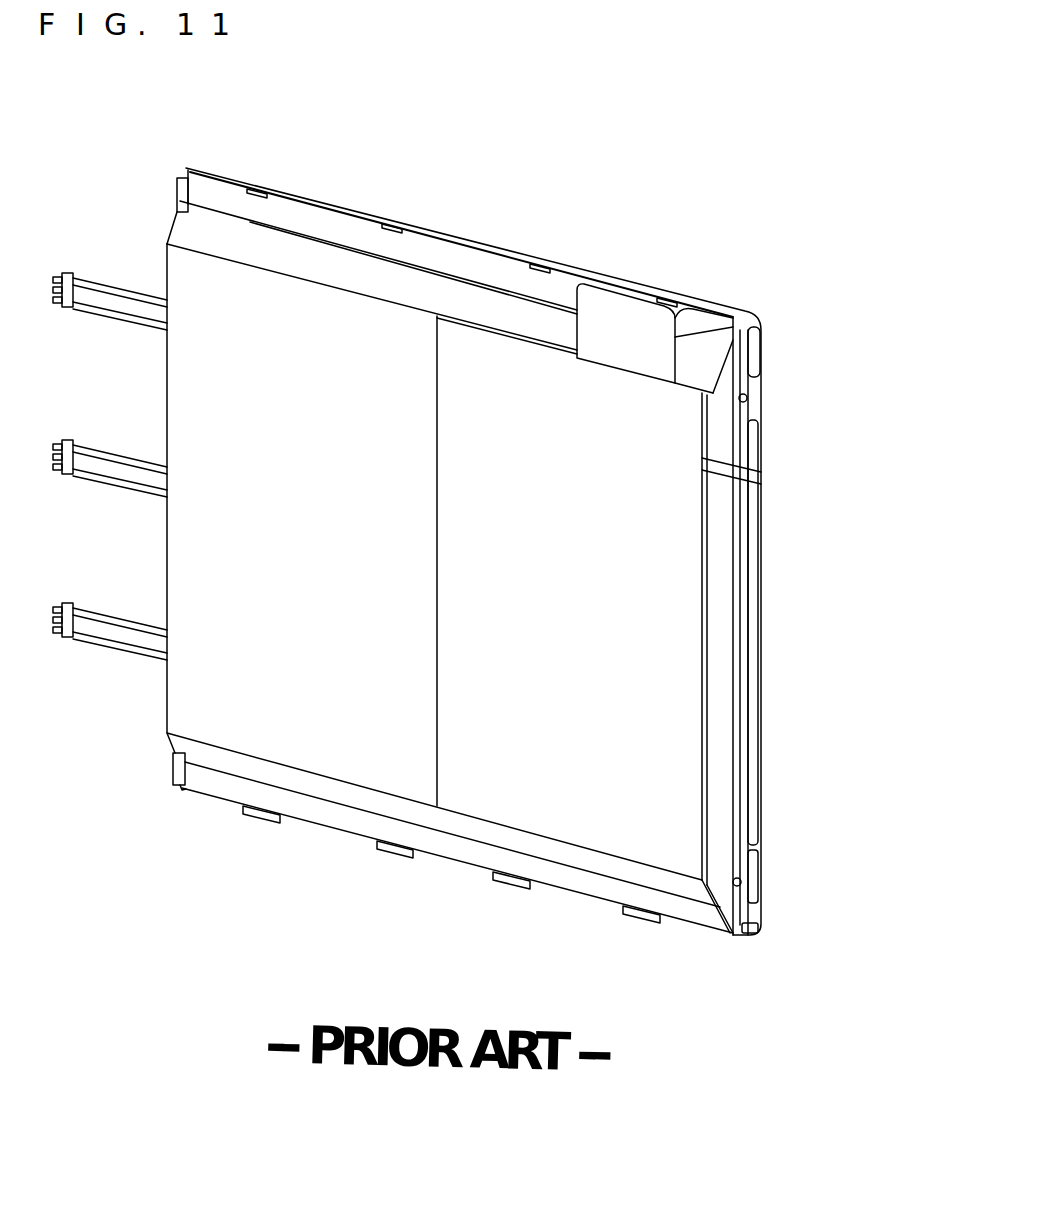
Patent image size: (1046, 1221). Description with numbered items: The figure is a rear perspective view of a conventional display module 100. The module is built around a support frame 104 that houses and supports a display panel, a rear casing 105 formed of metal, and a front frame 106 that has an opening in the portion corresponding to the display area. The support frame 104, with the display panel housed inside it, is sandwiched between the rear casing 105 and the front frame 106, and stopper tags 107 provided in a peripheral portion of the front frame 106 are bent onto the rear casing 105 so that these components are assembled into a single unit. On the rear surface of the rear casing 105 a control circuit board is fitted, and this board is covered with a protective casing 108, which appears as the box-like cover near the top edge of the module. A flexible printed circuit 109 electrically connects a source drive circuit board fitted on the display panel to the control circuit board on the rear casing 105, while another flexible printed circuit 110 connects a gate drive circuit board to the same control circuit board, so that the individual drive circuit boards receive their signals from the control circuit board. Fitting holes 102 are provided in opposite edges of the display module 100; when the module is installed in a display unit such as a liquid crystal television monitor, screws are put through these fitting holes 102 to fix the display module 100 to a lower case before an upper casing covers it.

The display module 100 is at (496, 211).
The fitting holes 102 is at (747, 393).
The support frame 104 is at (755, 868).
The rear casing 105 is at (328, 796).
The front frame 106 is at (229, 168).
The stopper tags 107 is at (403, 226).
The protective casing 108 is at (447, 666).
The flexible printed circuit 109 is at (620, 318).
The flexible printed circuit 110 is at (737, 470).